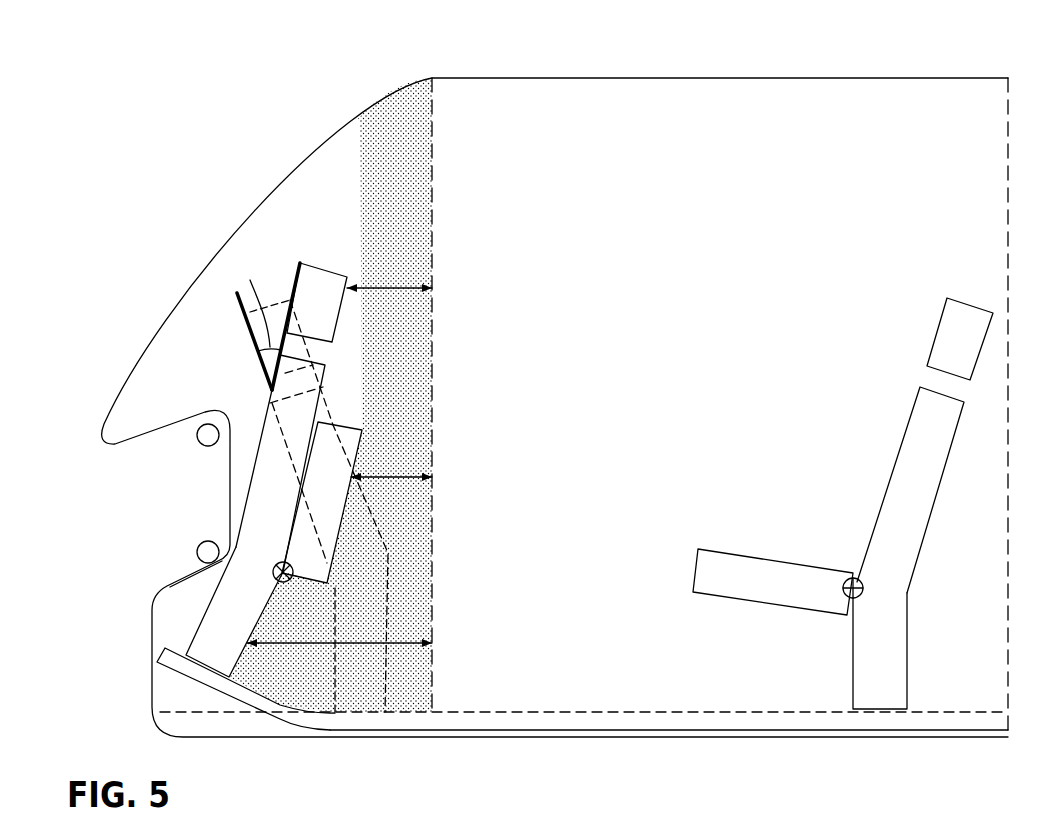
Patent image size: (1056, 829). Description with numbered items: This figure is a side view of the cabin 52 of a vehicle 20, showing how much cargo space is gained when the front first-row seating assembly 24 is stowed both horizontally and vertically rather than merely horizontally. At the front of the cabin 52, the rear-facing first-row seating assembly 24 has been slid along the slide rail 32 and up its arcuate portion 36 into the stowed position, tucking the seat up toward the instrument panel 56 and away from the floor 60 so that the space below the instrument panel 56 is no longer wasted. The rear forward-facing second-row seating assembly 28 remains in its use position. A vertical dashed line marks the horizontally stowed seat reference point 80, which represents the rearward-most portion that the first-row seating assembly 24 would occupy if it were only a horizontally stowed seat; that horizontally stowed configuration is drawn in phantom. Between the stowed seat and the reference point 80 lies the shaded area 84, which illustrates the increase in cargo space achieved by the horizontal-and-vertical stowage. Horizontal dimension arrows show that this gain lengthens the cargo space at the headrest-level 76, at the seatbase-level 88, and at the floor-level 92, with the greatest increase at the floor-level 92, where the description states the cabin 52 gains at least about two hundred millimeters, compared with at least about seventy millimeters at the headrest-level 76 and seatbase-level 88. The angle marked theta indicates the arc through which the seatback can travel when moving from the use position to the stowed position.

The vehicle 20 is at (169, 177).
The first-row seating assembly 24 is at (232, 446).
The second-row seating assembly 28 is at (870, 544).
The slide rail 32 is at (538, 736).
The arcuate portion 36 is at (185, 673).
The cabin 52 is at (644, 120).
The instrument panel 56 is at (228, 483).
The floor 60 is at (203, 715).
The headrest-level 76 is at (390, 287).
The horizontally stowed seat reference point 80 is at (433, 122).
The shaded area 84 is at (392, 118).
The seatbase-level 88 is at (400, 476).
The floor-level 92 is at (400, 642).